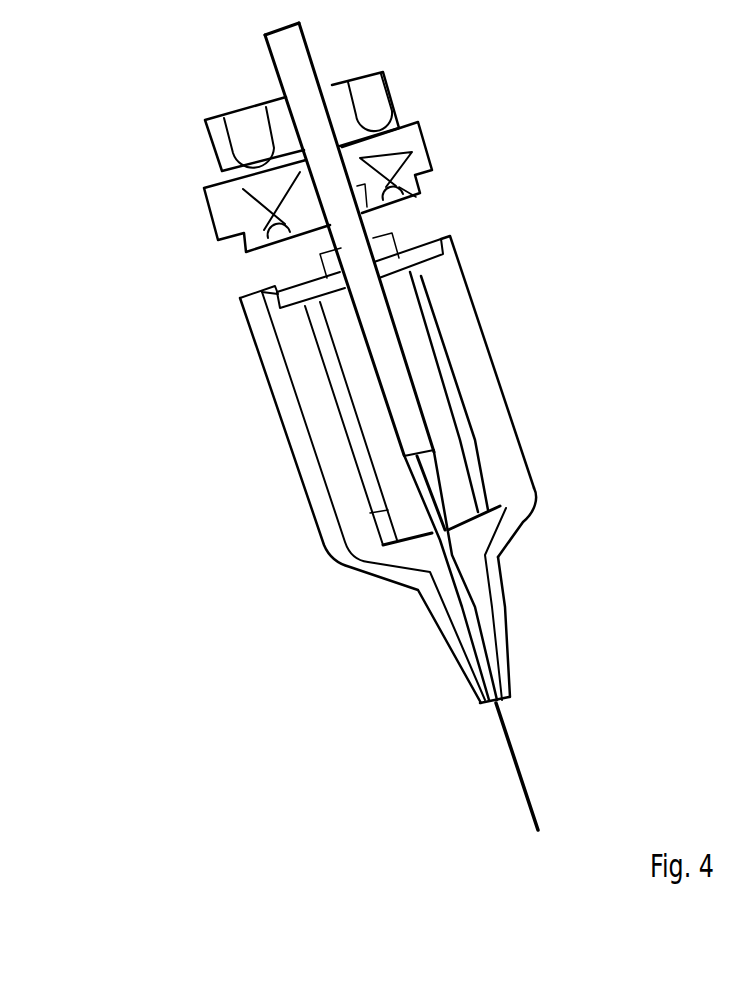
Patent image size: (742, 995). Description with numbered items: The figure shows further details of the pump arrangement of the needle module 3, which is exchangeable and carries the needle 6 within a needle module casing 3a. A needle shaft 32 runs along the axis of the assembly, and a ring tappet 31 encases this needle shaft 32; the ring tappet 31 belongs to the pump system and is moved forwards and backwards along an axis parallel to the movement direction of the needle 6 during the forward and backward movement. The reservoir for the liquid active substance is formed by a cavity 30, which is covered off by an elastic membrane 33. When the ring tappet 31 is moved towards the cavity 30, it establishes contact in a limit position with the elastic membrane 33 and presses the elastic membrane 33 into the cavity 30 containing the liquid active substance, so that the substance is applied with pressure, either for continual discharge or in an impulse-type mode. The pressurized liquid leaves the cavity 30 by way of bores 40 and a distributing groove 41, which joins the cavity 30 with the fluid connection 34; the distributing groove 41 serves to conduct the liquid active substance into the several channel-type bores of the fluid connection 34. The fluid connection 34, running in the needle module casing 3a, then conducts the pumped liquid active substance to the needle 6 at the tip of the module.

The needle module 3 is at (465, 340).
The needle module casing 3a is at (513, 478).
The needle 6 is at (515, 760).
The cavity 30 is at (395, 148).
The ring tappet 31 is at (367, 98).
The needle shaft 32 is at (287, 38).
The elastic membrane 33 is at (255, 173).
The fluid connection 34 is at (388, 513).
The bores 40 is at (413, 184).
The distributing groove 41 is at (417, 198).